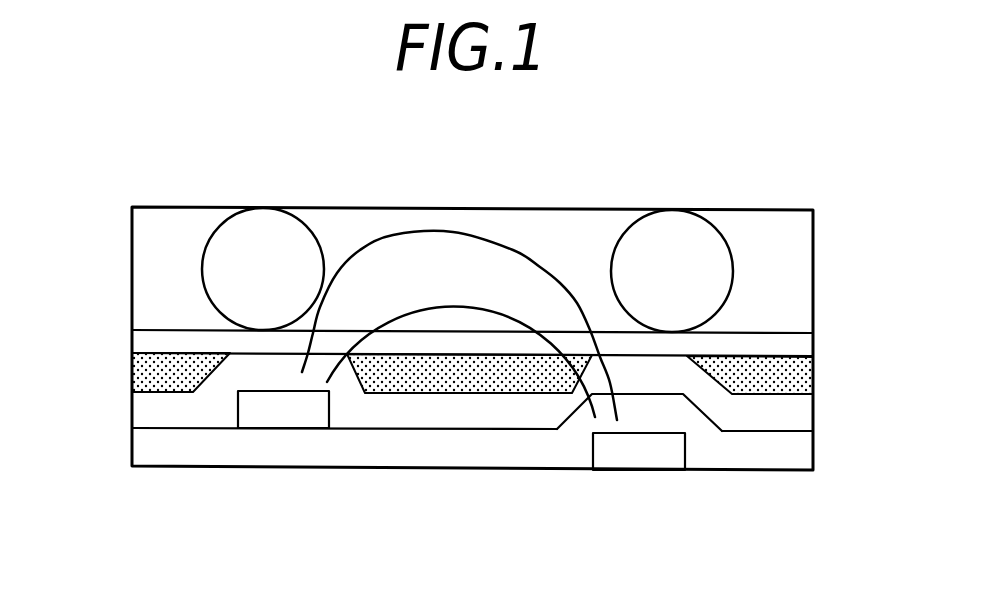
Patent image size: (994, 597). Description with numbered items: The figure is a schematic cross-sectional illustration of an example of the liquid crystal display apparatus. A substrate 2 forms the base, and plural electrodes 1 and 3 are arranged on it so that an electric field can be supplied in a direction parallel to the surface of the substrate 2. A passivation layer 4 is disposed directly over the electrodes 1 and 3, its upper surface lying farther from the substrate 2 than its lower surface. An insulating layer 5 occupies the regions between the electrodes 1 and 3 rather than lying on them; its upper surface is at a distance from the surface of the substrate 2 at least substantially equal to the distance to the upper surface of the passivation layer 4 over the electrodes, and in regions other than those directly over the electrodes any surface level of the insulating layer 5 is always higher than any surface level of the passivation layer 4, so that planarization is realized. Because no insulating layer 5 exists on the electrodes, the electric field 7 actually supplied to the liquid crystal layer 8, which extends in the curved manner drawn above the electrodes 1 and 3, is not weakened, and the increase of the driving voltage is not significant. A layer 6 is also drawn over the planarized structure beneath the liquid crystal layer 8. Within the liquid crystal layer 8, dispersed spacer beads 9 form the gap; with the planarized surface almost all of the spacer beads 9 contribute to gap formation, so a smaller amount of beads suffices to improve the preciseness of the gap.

The electrode 1 is at (640, 452).
The substrate 2 is at (195, 458).
The electrode 3 is at (295, 413).
The passivation layer 4 is at (770, 417).
The insulating layer 5 is at (797, 377).
The alignment layer 6 is at (142, 343).
The electric field 7 is at (557, 280).
The liquid crystal layer 8 is at (142, 260).
The spacer beads 9 is at (267, 248).